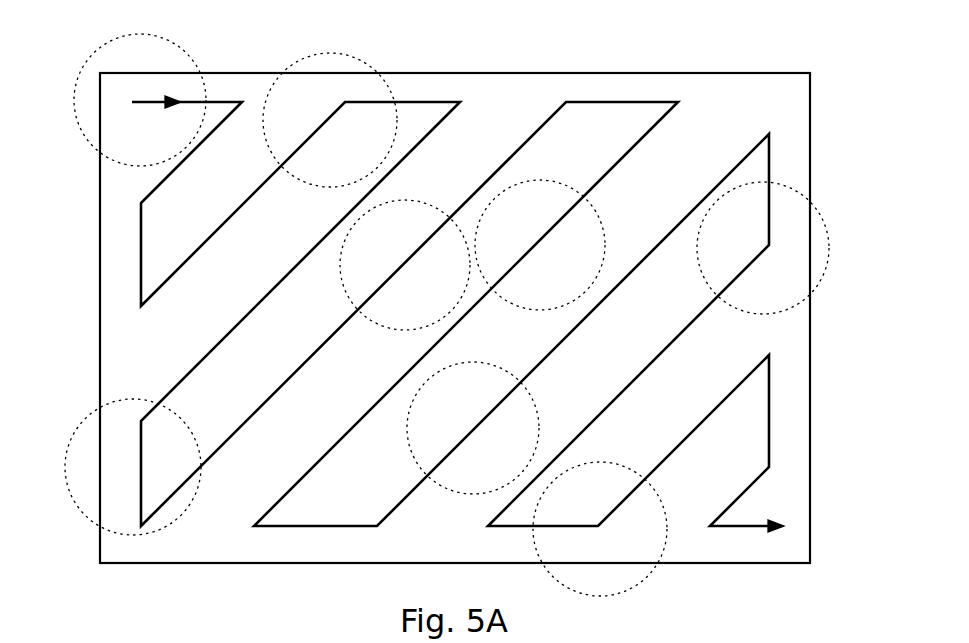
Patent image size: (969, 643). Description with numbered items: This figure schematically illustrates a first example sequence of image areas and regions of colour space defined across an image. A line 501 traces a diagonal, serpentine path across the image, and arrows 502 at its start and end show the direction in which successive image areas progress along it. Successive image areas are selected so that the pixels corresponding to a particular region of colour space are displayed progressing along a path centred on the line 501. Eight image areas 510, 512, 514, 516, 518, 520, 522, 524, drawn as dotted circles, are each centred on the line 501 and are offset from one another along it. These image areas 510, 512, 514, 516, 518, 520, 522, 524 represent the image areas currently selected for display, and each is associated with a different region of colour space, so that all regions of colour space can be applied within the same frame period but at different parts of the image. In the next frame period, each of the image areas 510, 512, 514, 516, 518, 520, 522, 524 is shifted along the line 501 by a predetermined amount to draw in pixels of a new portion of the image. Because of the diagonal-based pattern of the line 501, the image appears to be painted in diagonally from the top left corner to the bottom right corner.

The line 501 is at (140, 250).
The arrows 502 is at (174, 103).
The image area 510 is at (200, 58).
The image area 512 is at (351, 58).
The image area 514 is at (133, 400).
The image area 516 is at (342, 283).
The image area 518 is at (605, 220).
The image area 520 is at (539, 396).
The image area 522 is at (752, 311).
The image area 524 is at (620, 461).